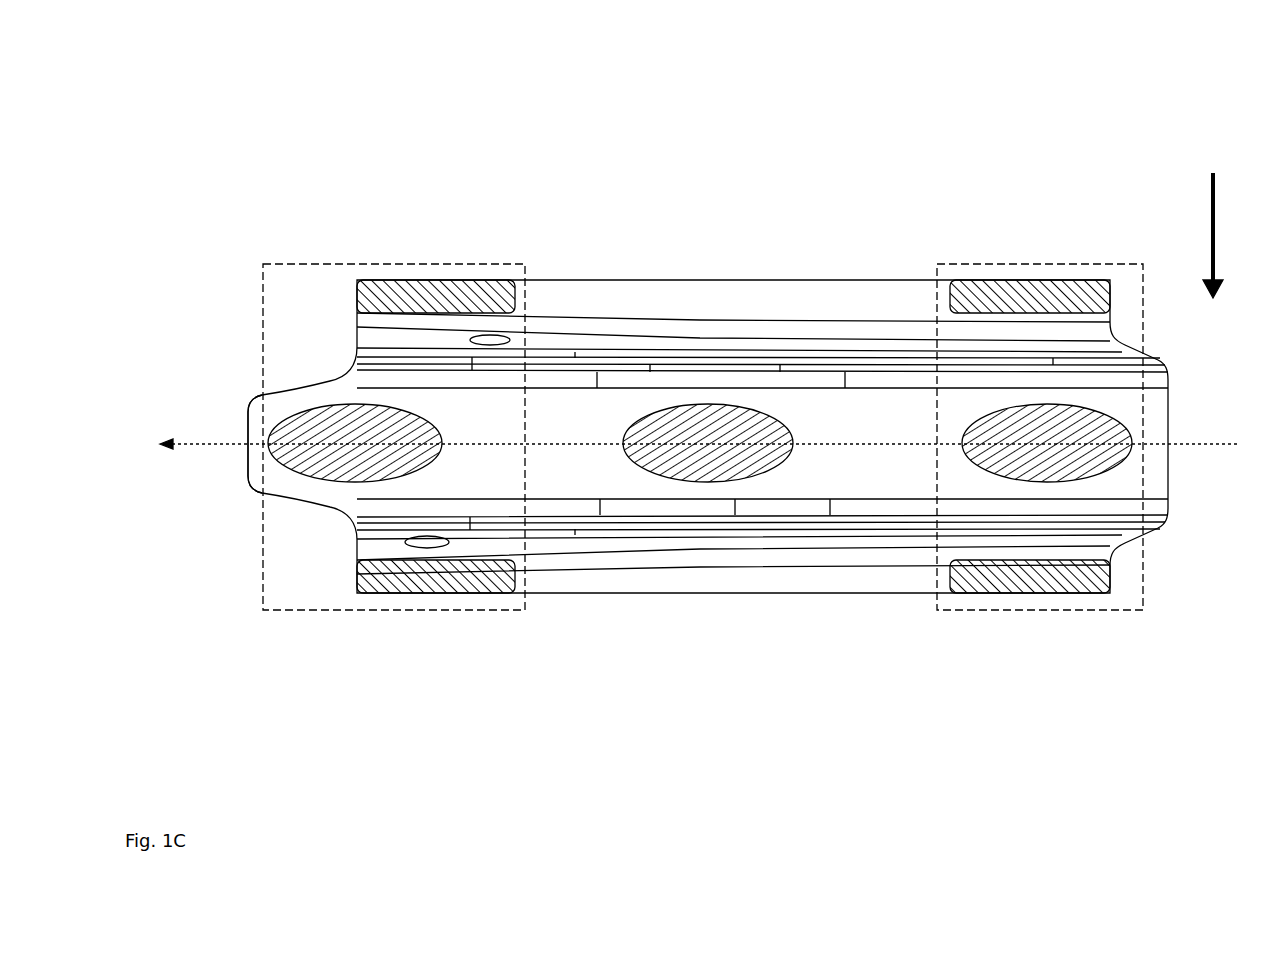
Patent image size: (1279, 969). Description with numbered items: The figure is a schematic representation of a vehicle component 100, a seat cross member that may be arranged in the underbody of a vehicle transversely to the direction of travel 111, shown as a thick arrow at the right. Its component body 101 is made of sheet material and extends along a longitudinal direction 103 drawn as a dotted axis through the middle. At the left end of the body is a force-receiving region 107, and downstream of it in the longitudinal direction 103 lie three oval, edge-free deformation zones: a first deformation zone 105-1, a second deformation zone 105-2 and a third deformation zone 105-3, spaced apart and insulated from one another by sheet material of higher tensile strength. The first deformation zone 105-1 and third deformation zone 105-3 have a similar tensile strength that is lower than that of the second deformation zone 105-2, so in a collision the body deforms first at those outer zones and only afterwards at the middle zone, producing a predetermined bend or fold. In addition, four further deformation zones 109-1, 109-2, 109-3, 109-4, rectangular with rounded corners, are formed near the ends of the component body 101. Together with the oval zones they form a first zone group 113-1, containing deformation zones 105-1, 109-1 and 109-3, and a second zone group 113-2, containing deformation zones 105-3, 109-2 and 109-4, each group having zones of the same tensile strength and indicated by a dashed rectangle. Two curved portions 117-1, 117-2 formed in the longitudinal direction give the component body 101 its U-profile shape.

The vehicle component 100 is at (396, 114).
The component body 101 is at (773, 300).
The longitudinal direction 103 is at (719, 435).
The first deformation zone 105-1 is at (378, 425).
The second deformation zone 105-2 is at (775, 430).
The third deformation zone 105-3 is at (1000, 435).
The force-receiving region 107 is at (260, 430).
The further deformation zone 109-1 is at (385, 290).
The further deformation zone 109-2 is at (985, 287).
The further deformation zone 109-3 is at (380, 588).
The further deformation zone 109-4 is at (995, 585).
The direction of travel 111 is at (1232, 235).
The first zone group 113-1 is at (470, 262).
The second zone group 113-2 is at (1085, 262).
The curved portion 117-1 is at (390, 378).
The curved portion 117-2 is at (365, 523).